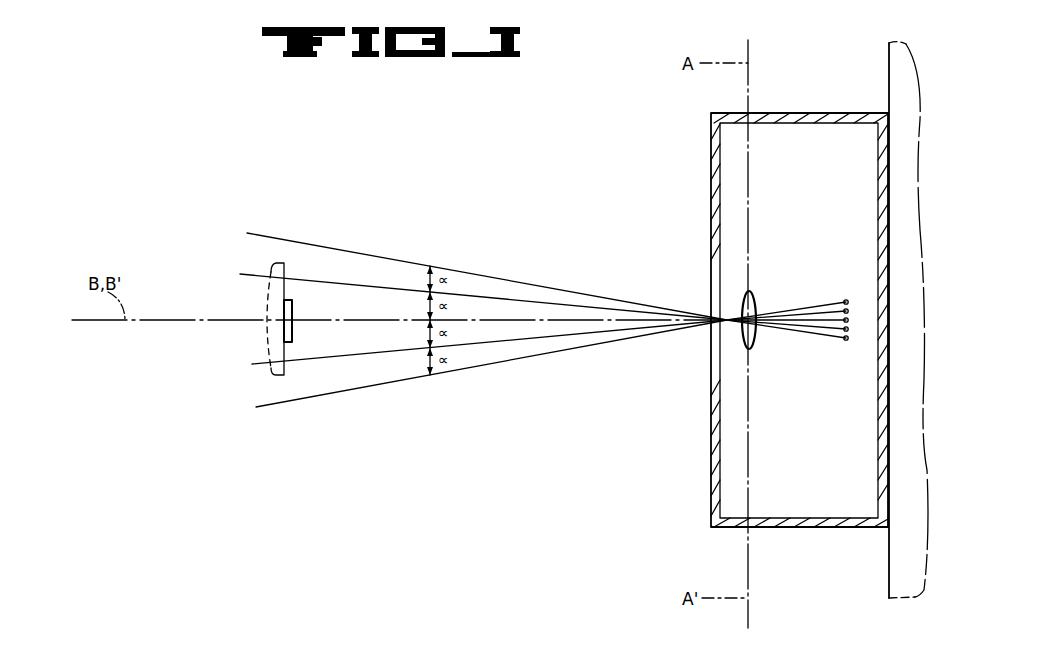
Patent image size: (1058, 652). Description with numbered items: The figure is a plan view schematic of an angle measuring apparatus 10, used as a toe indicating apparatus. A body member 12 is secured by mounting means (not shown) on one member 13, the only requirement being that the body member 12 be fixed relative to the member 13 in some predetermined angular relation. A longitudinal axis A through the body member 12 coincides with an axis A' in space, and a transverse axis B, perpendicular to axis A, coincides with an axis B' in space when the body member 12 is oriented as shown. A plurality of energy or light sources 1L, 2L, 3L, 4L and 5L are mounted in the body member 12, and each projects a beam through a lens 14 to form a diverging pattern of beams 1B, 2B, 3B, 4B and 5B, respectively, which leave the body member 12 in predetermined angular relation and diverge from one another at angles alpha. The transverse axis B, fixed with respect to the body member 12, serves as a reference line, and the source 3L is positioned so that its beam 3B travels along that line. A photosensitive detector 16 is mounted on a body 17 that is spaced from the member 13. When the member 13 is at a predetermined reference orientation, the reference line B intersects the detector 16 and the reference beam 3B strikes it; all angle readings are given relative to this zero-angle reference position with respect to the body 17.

The angle measuring apparatus 10 is at (497, 201).
The body member 12 is at (711, 423).
The member 13 is at (889, 548).
The lens 14 is at (741, 337).
The photosensitive detector 16 is at (293, 309).
The body 17 is at (270, 262).
The light source 1L is at (846, 301).
The light source 2L is at (849, 310).
The light source 3L is at (851, 321).
The light source 4L is at (849, 330).
The light source 5L is at (846, 340).
The beam 1B is at (403, 381).
The beam 2B is at (403, 351).
The reference beam 3B is at (403, 321).
The beam 4B is at (403, 289).
The beam 5B is at (403, 259).